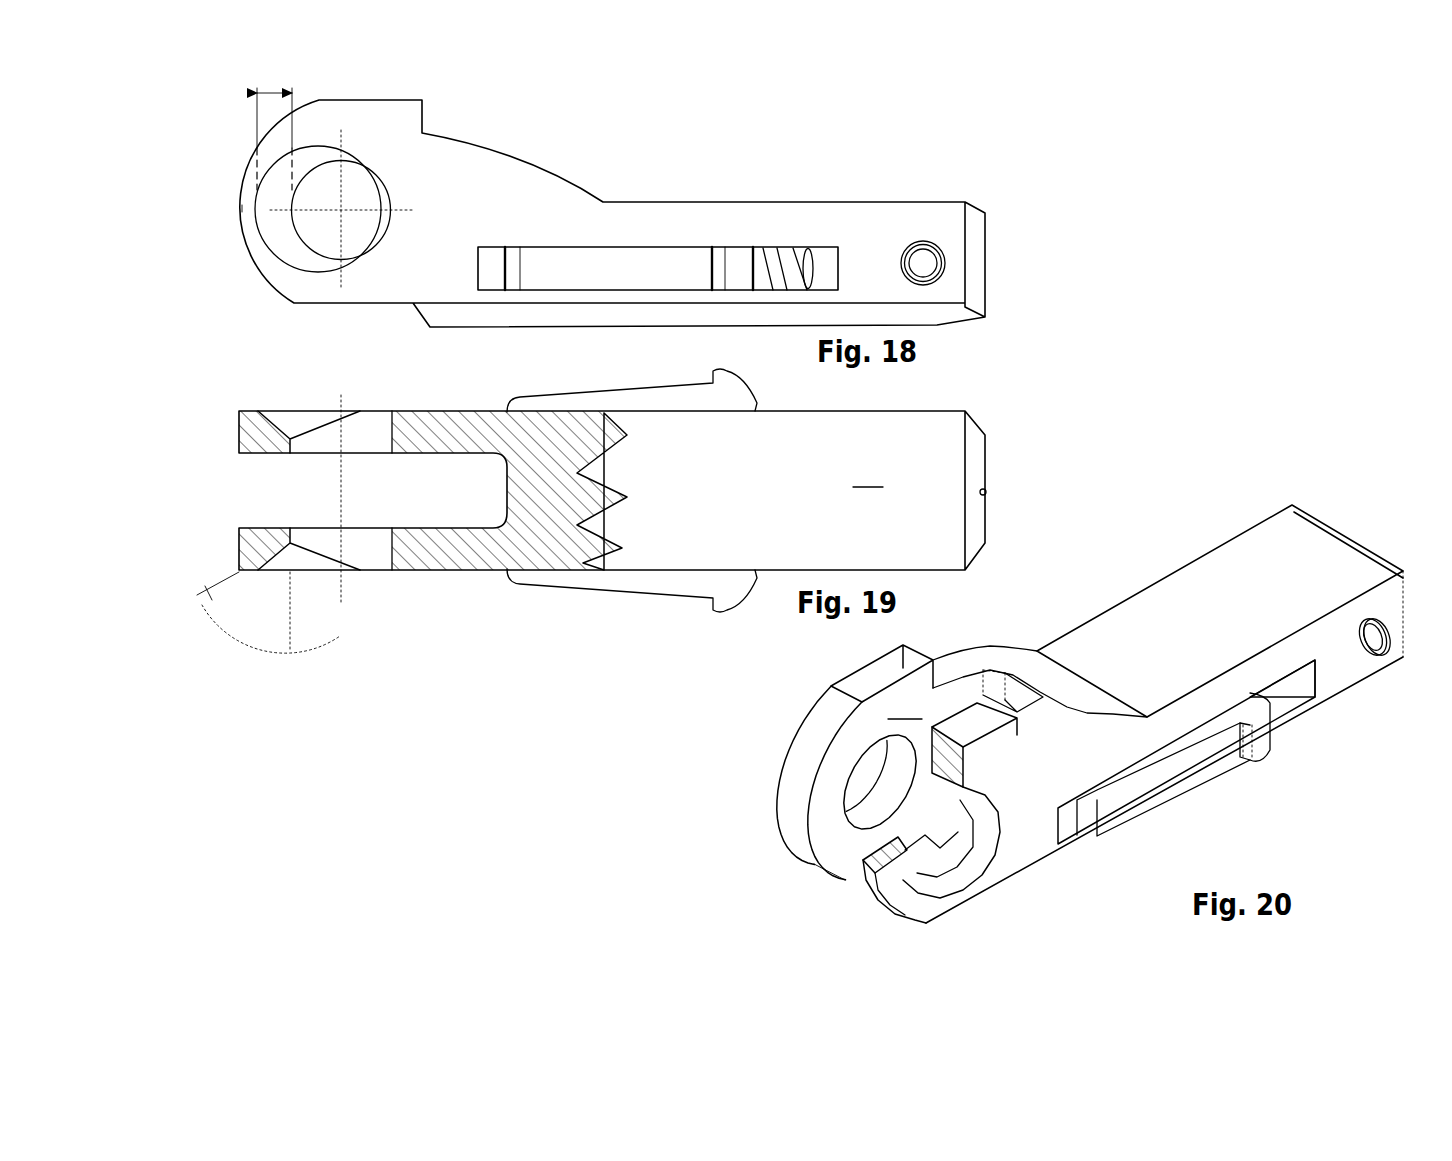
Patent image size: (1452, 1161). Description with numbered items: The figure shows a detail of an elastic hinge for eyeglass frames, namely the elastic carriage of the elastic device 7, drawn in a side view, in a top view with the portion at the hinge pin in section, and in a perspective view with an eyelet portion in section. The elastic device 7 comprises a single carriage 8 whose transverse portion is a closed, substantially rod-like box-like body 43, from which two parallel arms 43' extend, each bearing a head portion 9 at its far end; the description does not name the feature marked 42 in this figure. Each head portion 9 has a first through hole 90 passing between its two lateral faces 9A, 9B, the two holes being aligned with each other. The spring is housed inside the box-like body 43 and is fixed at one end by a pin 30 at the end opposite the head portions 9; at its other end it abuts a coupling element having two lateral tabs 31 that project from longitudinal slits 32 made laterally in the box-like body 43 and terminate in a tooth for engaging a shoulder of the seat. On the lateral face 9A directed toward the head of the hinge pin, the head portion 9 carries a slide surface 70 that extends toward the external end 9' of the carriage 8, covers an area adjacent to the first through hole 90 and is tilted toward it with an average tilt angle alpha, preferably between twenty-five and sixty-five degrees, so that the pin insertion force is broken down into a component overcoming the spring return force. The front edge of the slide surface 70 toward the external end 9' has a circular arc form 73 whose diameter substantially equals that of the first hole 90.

In FIG. 18, the elastic device 7 is at (658, 160).
In FIG. 19, the elastic device 7 is at (619, 625).
In FIG. 18, the carriage 8 is at (968, 146).
In FIG. 19, the carriage 8 is at (1037, 381).
In FIG. 20, the carriage 8 is at (1174, 488).
In FIG. 18, the head portion 9 is at (612, 191).
In FIG. 19, the head portion 9 is at (263, 459).
In FIG. 20, the head portion 9 is at (892, 786).
In FIG. 18, the external end 9' is at (211, 211).
In FIG. 19, the external end 9' is at (210, 431).
In FIG. 20, the external end 9' is at (786, 850).
In FIG. 18, the lateral face 9A is at (419, 171).
In FIG. 19, the lateral face 9A is at (258, 410).
In FIG. 20, the lateral face 9A is at (974, 745).
In FIG. 19, the lateral face 9B is at (267, 453).
In FIG. 20, the lateral face 9B is at (905, 706).
In FIG. 18, the pin 30 is at (923, 263).
In FIG. 20, the pin 30 is at (1372, 640).
In FIG. 18, the lateral tab 31 is at (678, 272).
In FIG. 19, the lateral tab 31 is at (731, 395).
In FIG. 20, the lateral tab 31 is at (1197, 767).
In FIG. 18, the longitudinal slit 32 is at (822, 273).
In FIG. 20, the longitudinal slit 32 is at (1285, 702).
In FIG. 18, the slot 42 is at (560, 213).
In FIG. 19, the slot 42 is at (548, 543).
In FIG. 20, the slot 42 is at (1027, 663).
In FIG. 18, the box-like body 43 is at (801, 172).
In FIG. 19, the box-like body 43 is at (612, 490).
In FIG. 20, the box-like body 43 is at (1164, 690).
In FIG. 19, the arm 43' is at (425, 497).
In FIG. 20, the arm 43' is at (1002, 648).
In FIG. 18, the slide surface 70 is at (292, 245).
In FIG. 19, the slide surface 70 is at (294, 430).
In FIG. 20, the slide surface 70 is at (918, 885).
In FIG. 18, the circular arc 73 is at (260, 230).
In FIG. 20, the circular arc 73 is at (933, 897).
In FIG. 18, the first through hole 90 is at (320, 187).
In FIG. 19, the first through hole 90 is at (361, 408).
In FIG. 20, the first through hole 90 is at (930, 820).
In FIG. 19, the tilt angle alpha is at (268, 619).